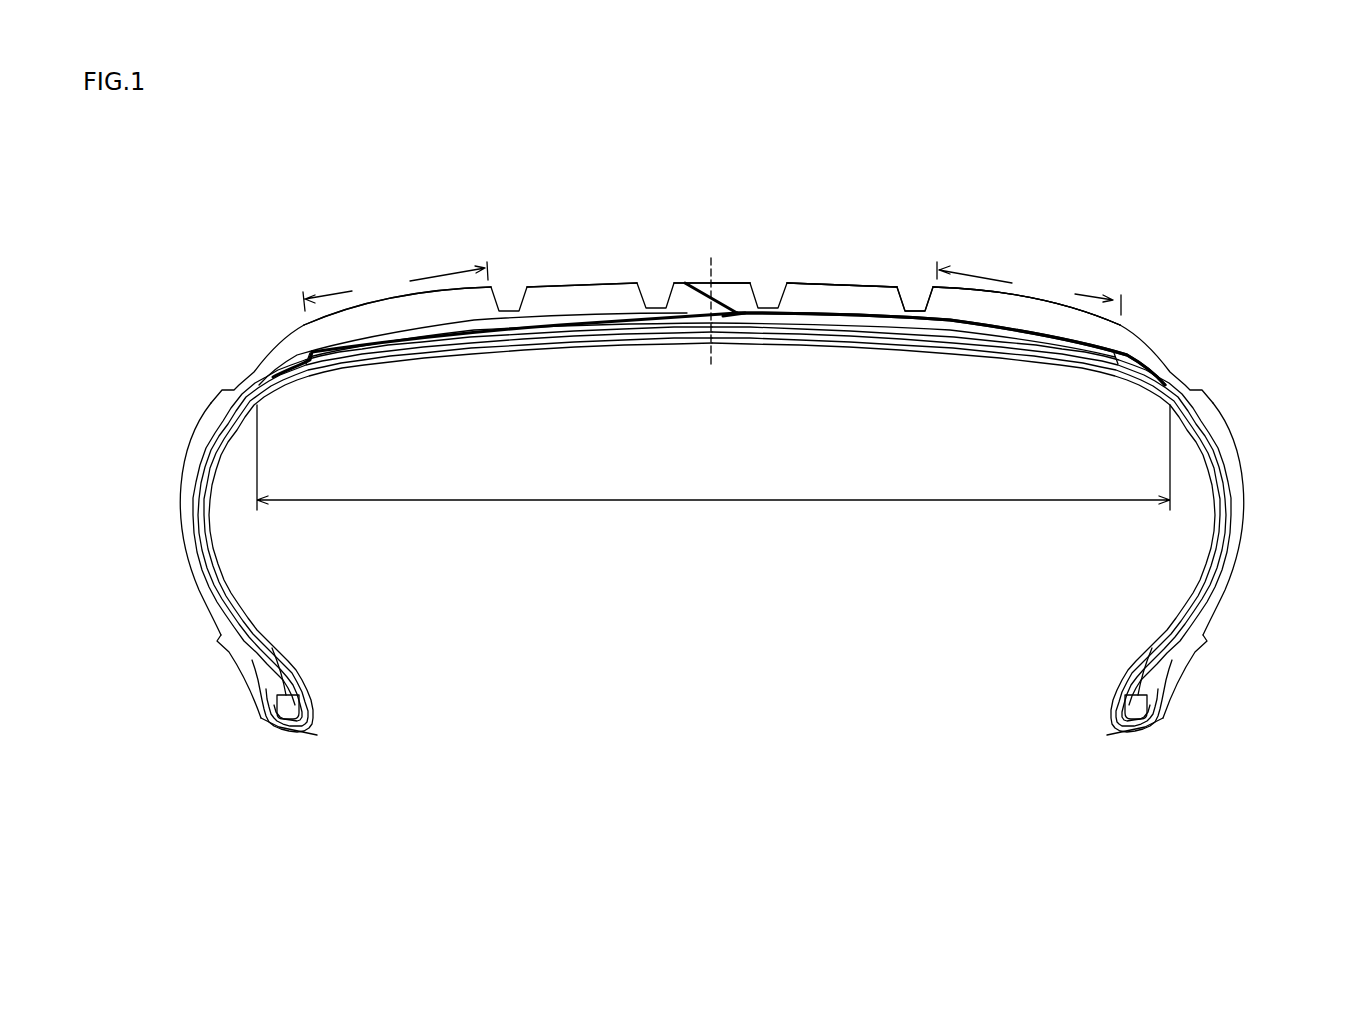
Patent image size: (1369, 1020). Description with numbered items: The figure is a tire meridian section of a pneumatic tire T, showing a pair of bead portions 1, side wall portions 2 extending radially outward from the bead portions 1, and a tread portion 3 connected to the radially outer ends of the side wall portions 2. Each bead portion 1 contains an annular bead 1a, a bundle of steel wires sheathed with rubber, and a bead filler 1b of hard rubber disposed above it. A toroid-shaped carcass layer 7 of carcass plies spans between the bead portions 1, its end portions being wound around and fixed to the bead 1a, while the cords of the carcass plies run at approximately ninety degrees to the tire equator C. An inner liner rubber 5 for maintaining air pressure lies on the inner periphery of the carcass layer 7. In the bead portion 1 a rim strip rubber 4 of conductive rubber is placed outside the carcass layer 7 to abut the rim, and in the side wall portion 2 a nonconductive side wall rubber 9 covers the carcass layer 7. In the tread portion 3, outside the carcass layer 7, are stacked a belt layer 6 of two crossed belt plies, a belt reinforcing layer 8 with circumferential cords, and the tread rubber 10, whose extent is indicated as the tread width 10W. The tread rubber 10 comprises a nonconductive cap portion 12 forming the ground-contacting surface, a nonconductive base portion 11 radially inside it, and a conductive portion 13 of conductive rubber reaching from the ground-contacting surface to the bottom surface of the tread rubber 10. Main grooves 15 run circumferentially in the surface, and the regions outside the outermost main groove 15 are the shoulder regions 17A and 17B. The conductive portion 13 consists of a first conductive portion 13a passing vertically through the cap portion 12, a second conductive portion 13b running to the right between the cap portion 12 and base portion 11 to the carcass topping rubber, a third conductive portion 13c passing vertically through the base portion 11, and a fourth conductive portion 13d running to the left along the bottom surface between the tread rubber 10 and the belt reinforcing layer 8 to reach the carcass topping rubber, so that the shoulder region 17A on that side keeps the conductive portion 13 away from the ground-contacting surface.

The pneumatic tire T is at (229, 233).
The bead portion 1 is at (262, 726).
The bead 1a is at (300, 705).
The bead filler 1b is at (287, 673).
The side wall portion 2 is at (174, 437).
The tread portion 3 is at (547, 239).
The rim strip rubber 4 is at (247, 662).
The inner liner rubber 5 is at (341, 367).
The belt layer 6 is at (555, 342).
The carcass layer 7 is at (1208, 430).
The belt reinforcing layer 8 is at (1038, 345).
The side wall rubber 9 is at (192, 537).
The tread rubber 10 is at (876, 283).
The base portion 11 is at (450, 322).
The cap portion 12 is at (838, 298).
The conductive portion 13 is at (813, 312).
The first conductive portion 13a is at (700, 288).
The second conductive portion 13b is at (988, 323).
The third conductive portion 13c is at (723, 320).
The fourth conductive portion 13d is at (575, 320).
The main groove 15 is at (514, 303).
The shoulder region 17A is at (395, 286).
The shoulder region 17B is at (1029, 288).
The tire equator C is at (713, 297).
The tread width 10W is at (713, 457).